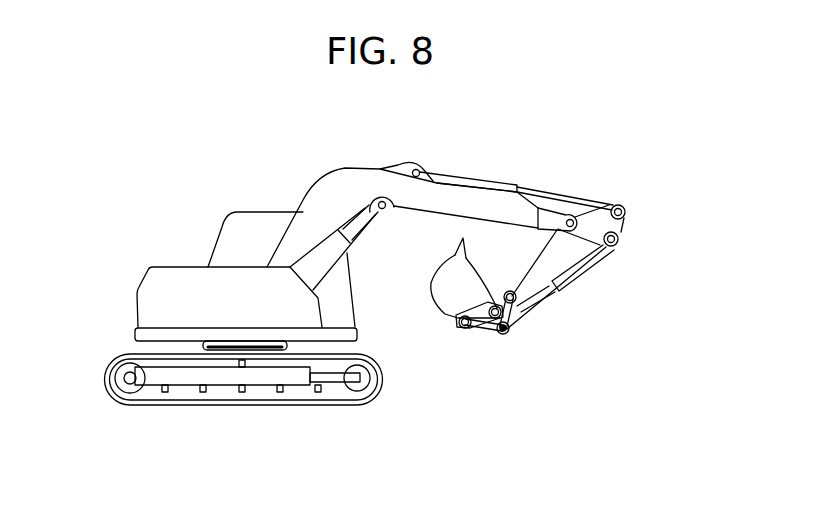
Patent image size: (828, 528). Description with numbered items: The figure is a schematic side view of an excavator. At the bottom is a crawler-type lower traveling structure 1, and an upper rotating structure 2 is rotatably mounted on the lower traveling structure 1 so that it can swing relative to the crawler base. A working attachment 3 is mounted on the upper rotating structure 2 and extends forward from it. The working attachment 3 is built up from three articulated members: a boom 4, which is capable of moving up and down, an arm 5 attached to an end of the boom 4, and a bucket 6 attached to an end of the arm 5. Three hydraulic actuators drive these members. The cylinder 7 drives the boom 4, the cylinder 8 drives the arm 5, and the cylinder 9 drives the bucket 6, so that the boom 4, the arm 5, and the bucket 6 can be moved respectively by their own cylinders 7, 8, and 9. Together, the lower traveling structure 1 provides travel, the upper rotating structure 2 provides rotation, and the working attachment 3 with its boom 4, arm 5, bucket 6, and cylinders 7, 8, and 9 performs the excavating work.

The lower traveling structure 1 is at (310, 403).
The upper rotating structure 2 is at (226, 202).
The working attachment 3 is at (588, 190).
The boom 4 is at (347, 170).
The arm 5 is at (575, 277).
The bucket 6 is at (434, 305).
The cylinder 7 is at (352, 245).
The cylinder 8 is at (491, 183).
The cylinder 9 is at (544, 303).